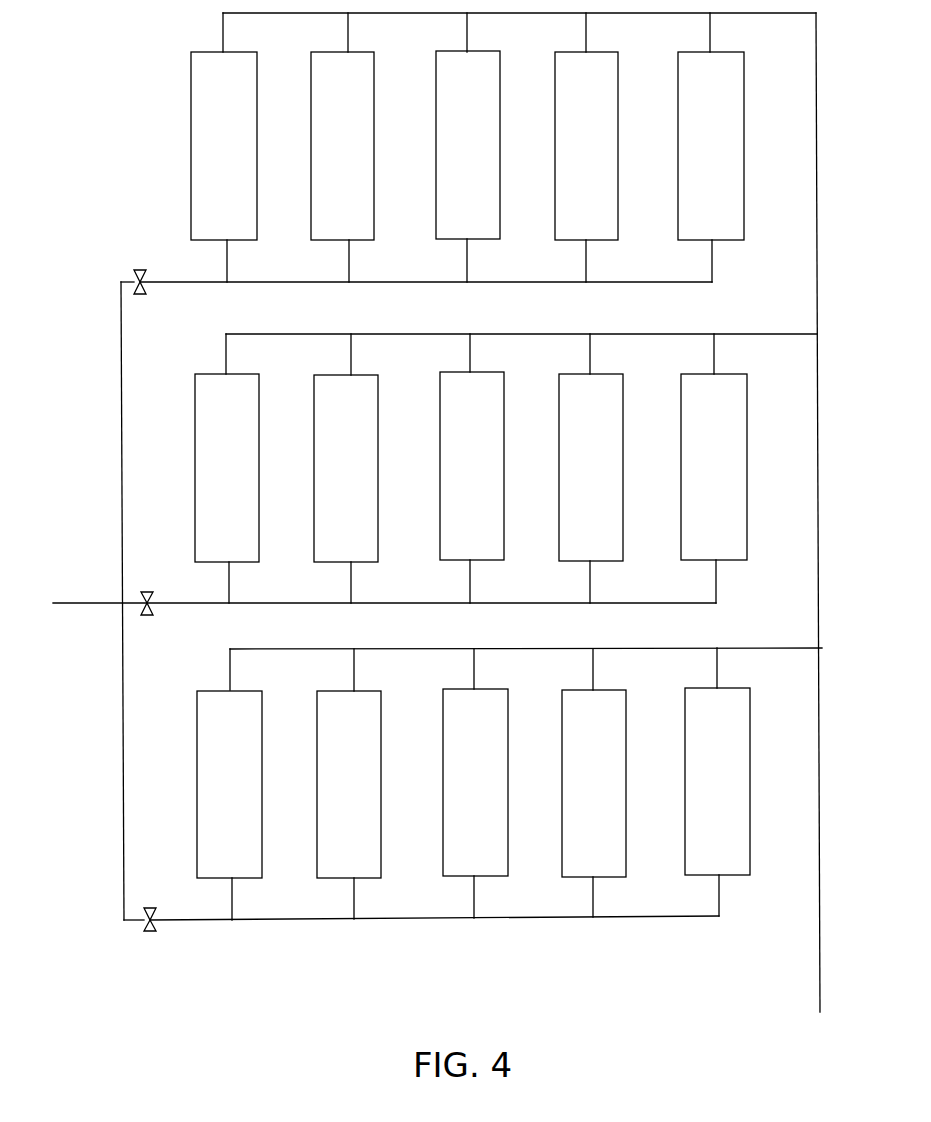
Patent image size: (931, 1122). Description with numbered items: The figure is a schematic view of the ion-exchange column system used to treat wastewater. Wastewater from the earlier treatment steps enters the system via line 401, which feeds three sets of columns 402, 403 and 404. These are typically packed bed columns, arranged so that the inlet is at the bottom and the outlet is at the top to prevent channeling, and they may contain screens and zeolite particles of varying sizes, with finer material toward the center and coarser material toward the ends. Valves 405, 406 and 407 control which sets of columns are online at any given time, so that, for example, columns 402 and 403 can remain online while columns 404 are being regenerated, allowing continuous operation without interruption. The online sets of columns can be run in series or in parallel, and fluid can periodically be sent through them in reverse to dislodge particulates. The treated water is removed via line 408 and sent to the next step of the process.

The line 401 is at (70, 606).
The first set of columns 402 is at (136, 76).
The second set of columns 403 is at (150, 405).
The third set of columns 404 is at (155, 745).
The valve 405 is at (138, 270).
The valve 406 is at (146, 592).
The valve 407 is at (149, 908).
The line 408 is at (818, 968).